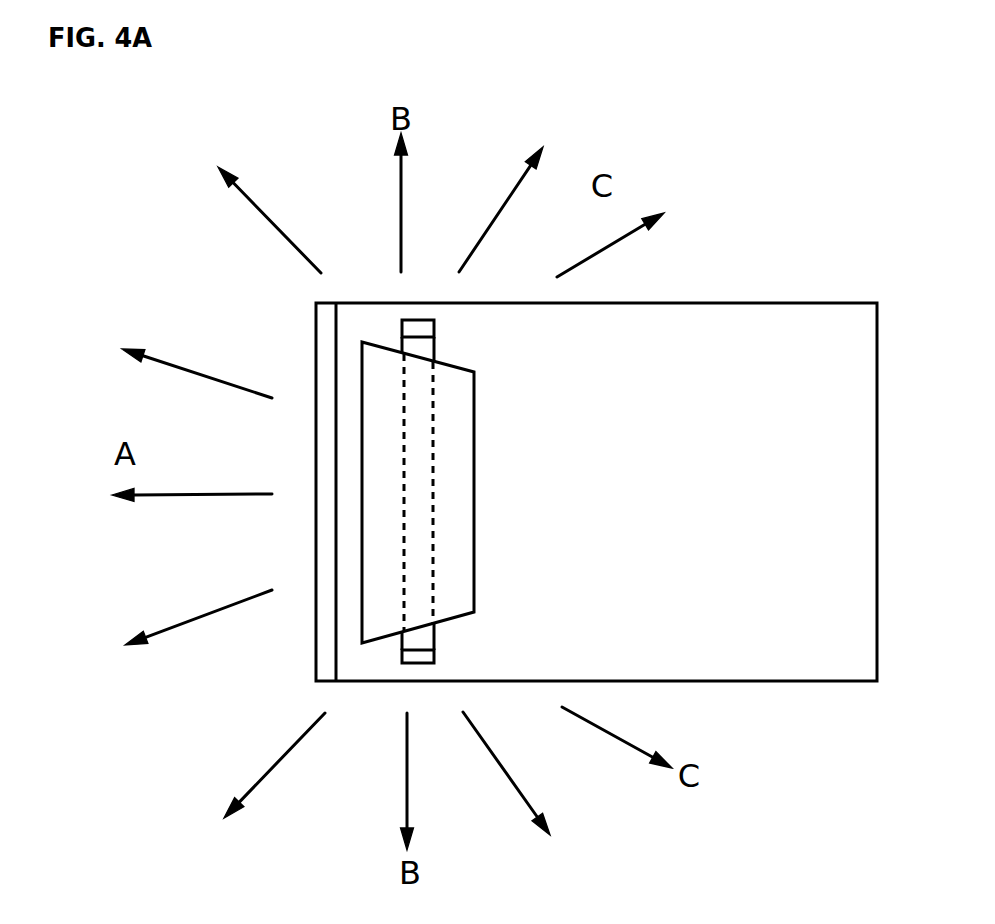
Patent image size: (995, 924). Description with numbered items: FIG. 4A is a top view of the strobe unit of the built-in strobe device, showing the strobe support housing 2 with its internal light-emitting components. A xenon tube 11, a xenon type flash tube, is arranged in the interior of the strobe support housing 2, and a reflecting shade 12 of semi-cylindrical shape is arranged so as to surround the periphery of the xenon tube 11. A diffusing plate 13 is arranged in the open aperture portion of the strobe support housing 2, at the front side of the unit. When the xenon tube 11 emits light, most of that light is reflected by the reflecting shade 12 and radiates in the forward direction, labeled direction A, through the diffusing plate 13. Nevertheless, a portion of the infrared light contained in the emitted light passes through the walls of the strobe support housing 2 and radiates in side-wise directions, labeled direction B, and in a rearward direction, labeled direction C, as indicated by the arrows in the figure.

The strobe support housing 2 is at (795, 302).
The xenon tube 11 is at (440, 642).
The reflecting shade 12 is at (476, 533).
The diffusing plate 13 is at (328, 651).